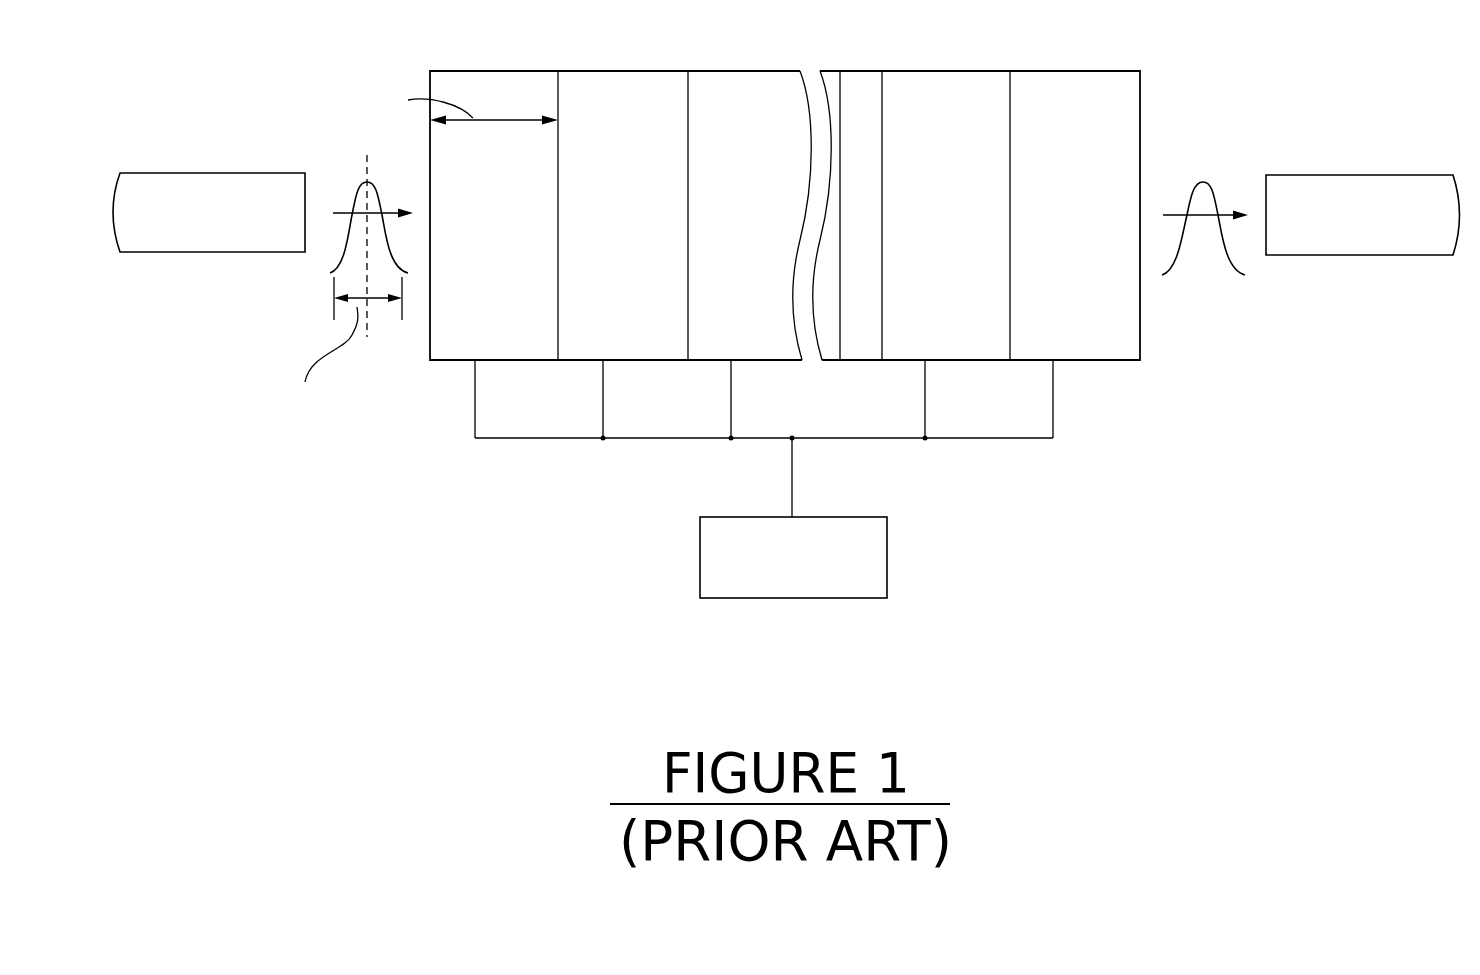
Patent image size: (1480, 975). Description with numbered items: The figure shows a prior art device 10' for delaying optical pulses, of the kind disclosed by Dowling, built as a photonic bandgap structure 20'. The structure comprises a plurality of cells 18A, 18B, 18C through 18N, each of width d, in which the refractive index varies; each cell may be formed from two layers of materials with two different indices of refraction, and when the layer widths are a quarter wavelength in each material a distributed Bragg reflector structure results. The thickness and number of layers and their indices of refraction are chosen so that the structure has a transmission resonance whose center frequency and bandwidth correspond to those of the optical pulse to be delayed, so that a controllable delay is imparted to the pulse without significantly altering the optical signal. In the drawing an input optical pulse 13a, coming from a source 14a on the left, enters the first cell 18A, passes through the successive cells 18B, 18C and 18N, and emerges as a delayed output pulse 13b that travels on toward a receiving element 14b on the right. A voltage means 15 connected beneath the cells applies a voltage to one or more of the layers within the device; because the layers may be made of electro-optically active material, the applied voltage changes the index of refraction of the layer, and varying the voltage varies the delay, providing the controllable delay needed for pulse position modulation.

The prior art optical filter system 10' is at (786, 305).
The waveguide / filter body 20' is at (759, 186).
The cell 18A is at (493, 71).
The cell 18B is at (597, 71).
The cell 18C is at (722, 71).
The cell 18N is at (1047, 71).
The light source 14a is at (230, 173).
The input light beam 13a is at (365, 180).
The output light beam 13b is at (1208, 181).
The detector 14b is at (1343, 175).
The voltage means 15 is at (887, 547).